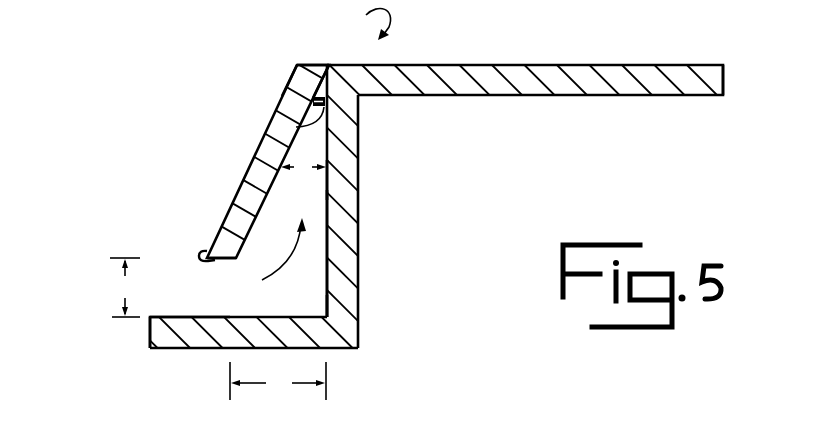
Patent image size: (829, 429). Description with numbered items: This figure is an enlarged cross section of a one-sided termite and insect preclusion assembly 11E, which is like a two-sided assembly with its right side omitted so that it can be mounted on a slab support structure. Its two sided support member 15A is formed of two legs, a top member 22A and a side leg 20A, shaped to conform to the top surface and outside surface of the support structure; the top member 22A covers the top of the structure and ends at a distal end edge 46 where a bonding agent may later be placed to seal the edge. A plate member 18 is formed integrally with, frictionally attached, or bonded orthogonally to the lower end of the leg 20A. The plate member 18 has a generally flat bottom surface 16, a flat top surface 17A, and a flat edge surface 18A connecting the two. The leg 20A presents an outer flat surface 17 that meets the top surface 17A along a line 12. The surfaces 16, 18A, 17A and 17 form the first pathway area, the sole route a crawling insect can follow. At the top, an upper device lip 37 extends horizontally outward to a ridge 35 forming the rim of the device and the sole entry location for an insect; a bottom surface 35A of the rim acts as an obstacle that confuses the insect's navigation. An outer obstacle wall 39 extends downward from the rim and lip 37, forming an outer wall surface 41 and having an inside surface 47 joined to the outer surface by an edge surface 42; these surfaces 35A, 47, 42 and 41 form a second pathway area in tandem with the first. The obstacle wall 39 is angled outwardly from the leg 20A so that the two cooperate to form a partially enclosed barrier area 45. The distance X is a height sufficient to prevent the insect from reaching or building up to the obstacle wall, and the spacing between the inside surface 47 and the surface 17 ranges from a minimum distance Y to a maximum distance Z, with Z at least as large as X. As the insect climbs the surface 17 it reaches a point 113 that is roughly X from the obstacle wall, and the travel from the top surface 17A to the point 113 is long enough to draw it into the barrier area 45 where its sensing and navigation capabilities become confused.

The line 12 is at (327, 312).
The two sided support member 15A is at (410, 158).
The bottom surface 16 is at (208, 349).
The outer flat surface 17 is at (318, 217).
The top surface 17A is at (193, 316).
The plate member 18 is at (198, 337).
The flat edge surface 18A is at (150, 328).
The leg 20A is at (350, 247).
The top member 22A is at (511, 88).
The ridge 35 is at (297, 64).
The bottom surface of the rim 35A is at (333, 64).
The upper device lip 37 is at (315, 63).
The outer obstacle wall 39 is at (266, 140).
The outer wall surface 41 is at (239, 185).
The edge surface 42 is at (206, 258).
The barrier area 45 is at (266, 259).
The distal end edge 46 is at (724, 76).
The inside surface 47 is at (250, 225).
The point 113 is at (325, 178).
The preclusion assembly 11E is at (354, 21).
The distance X is at (218, 237).
The minimum distance Y is at (296, 127).
The maximum distance Z is at (278, 381).